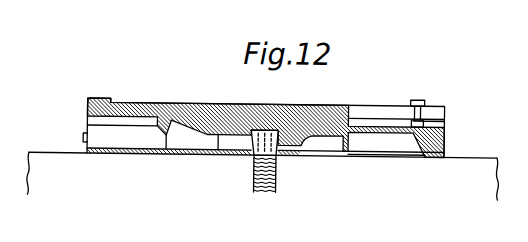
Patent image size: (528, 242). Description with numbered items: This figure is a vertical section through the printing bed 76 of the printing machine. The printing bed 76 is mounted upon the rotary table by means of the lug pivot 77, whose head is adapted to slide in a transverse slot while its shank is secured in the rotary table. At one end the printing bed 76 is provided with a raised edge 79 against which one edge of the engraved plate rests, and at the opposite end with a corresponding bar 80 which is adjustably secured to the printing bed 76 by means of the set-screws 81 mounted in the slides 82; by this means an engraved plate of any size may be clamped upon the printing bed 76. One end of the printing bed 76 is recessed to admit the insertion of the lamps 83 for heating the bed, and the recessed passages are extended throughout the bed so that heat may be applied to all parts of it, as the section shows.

The printing bed 76 is at (238, 105).
The lug pivot 77 is at (253, 154).
The raised edge 79 is at (103, 98).
The bar 80 is at (408, 98).
The set-screws 81 is at (432, 107).
The slides 82 is at (443, 116).
The lamps 83 is at (100, 132).